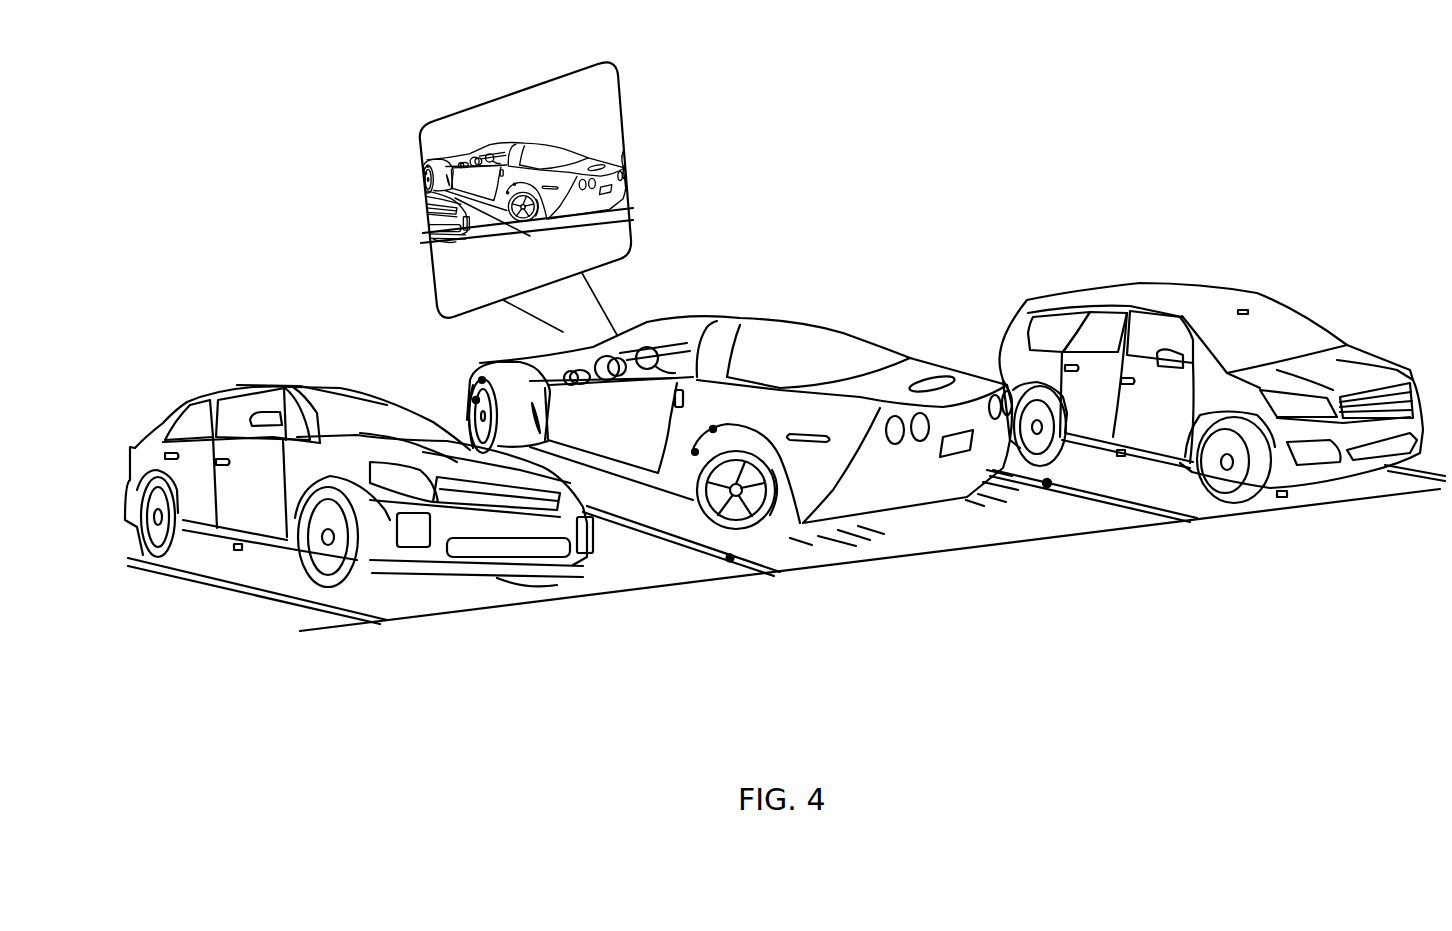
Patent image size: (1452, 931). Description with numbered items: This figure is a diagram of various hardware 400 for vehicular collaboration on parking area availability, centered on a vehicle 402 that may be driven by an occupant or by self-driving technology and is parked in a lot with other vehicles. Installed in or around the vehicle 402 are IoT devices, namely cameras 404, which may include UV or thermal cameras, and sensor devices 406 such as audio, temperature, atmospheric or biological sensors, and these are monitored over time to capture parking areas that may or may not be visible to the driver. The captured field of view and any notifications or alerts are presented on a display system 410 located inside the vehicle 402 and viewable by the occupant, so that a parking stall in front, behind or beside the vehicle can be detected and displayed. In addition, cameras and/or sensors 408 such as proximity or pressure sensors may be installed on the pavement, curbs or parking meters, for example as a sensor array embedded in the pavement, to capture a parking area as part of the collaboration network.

The various hardware 400 is at (340, 48).
The vehicle 402 is at (702, 328).
The cameras 404 is at (695, 454).
The sensor devices 406 is at (715, 425).
The cameras and/or sensors 408 is at (1042, 488).
The display system 410 is at (616, 337).